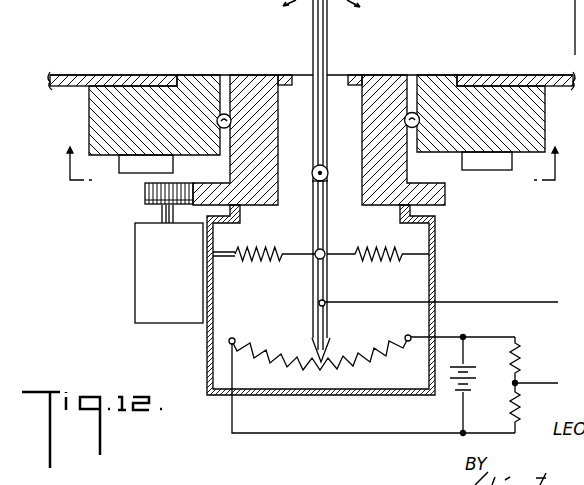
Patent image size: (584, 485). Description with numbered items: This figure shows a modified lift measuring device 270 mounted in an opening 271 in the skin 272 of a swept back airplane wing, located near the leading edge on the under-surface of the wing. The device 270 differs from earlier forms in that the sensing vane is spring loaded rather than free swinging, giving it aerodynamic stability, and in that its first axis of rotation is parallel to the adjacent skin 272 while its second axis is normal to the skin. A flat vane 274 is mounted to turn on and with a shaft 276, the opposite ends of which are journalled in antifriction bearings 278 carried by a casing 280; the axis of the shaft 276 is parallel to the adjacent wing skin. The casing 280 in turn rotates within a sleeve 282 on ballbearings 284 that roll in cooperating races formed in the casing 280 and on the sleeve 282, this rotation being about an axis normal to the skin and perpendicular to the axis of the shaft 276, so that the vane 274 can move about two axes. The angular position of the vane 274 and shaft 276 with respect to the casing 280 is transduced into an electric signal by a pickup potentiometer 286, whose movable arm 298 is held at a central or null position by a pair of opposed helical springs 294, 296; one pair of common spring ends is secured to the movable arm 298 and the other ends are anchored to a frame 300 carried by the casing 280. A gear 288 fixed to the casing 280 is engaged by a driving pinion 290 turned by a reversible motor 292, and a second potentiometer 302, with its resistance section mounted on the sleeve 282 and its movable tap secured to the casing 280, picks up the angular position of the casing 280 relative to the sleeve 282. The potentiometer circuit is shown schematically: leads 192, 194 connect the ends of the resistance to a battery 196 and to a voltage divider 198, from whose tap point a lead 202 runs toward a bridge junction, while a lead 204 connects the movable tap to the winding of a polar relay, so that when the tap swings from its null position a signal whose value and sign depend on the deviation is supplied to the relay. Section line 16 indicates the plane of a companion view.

The section line 16 is at (316, 176).
The lead 192 is at (443, 337).
The lead 194 is at (347, 434).
The battery 196 is at (445, 391).
The voltage divider 198 is at (519, 376).
The lead 202 is at (544, 383).
The lead 204 is at (536, 300).
The lift measuring device 270 is at (360, 55).
The opening 271 is at (175, 82).
The skin 272 is at (497, 78).
The vane 274 is at (316, 33).
The shaft 276 is at (327, 169).
The antifriction bearings 278 is at (324, 182).
The casing 280 is at (277, 141).
The sleeve 282 is at (89, 126).
The ballbearings 284 is at (420, 121).
The pickup potentiometer 286 is at (368, 353).
The gear 288 is at (441, 205).
The driving pinion 290 is at (147, 204).
The reversible motor 292 is at (135, 267).
The helical spring 294 is at (278, 262).
The helical spring 296 is at (404, 262).
The movable arm 298 is at (316, 234).
The frame 300 is at (438, 287).
The potentiometer 302 is at (485, 170).